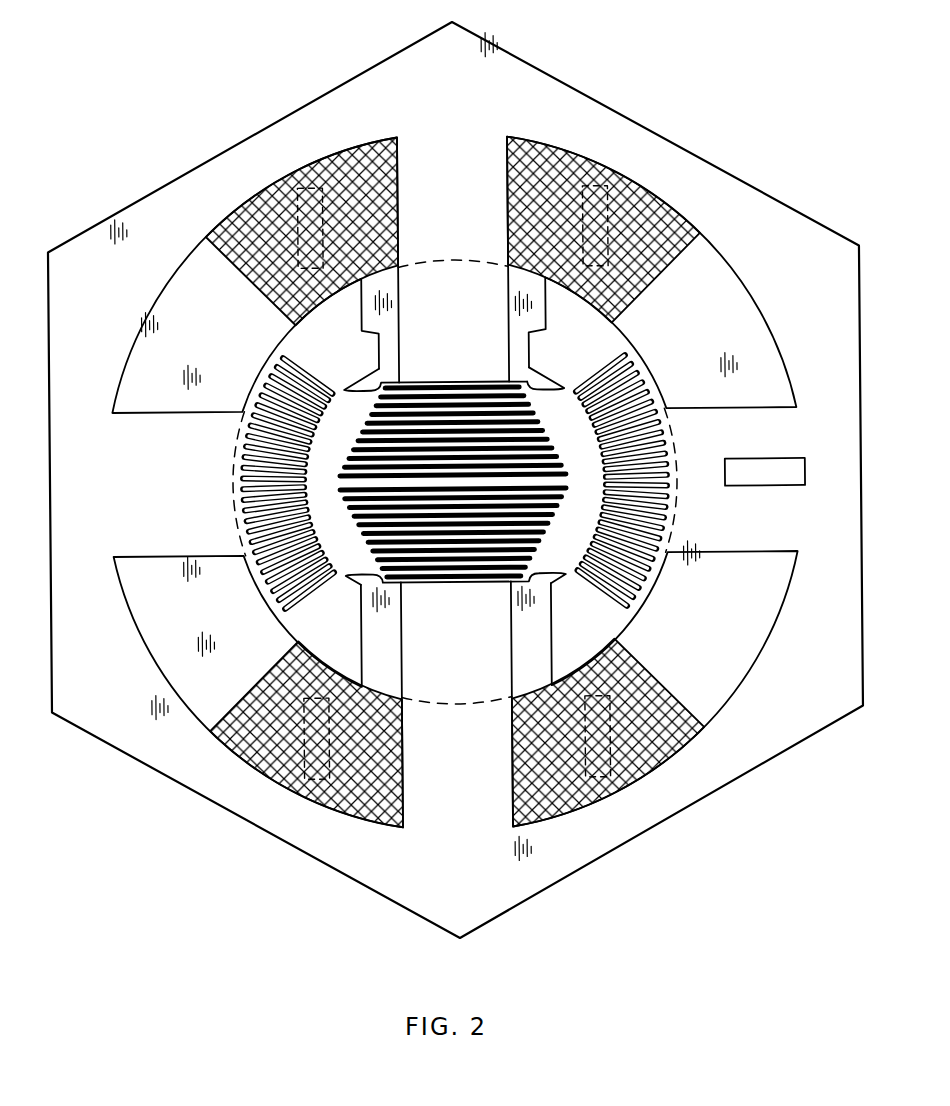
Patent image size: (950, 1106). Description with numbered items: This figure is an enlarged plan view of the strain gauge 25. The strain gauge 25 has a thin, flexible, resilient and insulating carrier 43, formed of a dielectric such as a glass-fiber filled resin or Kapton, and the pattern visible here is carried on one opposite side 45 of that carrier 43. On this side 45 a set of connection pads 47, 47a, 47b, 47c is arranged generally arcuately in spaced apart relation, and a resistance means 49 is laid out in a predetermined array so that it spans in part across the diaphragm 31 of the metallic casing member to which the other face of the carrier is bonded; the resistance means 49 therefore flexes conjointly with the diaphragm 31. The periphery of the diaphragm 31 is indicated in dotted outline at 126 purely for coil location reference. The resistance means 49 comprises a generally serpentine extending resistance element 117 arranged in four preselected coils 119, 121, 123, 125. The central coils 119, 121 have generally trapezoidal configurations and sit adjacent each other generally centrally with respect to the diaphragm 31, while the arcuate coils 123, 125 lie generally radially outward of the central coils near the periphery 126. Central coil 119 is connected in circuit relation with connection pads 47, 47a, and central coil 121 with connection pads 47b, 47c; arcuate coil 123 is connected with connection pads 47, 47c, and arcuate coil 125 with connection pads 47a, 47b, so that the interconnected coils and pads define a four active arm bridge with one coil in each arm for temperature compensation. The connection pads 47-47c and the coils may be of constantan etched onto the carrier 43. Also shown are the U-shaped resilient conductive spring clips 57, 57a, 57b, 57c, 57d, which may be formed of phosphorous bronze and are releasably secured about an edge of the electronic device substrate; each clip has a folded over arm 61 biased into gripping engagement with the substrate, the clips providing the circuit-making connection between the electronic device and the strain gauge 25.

The strain gauge 25 is at (840, 183).
The carrier 43 is at (796, 212).
The opposite side 45 is at (686, 158).
The connection pad 47 is at (160, 318).
The connection pad 47a is at (758, 318).
The connection pad 47b is at (753, 640).
The connection pad 47c is at (173, 655).
The spring clip 57 is at (320, 186).
The spring clip 57a is at (590, 190).
The spring clip 57b is at (606, 795).
The spring clip 57c is at (322, 776).
The spring clip 57d is at (790, 490).
The folded over arm 61 is at (267, 200).
The resistance element 117 is at (453, 478).
The central coil 119 is at (425, 385).
The central coil 121 is at (438, 580).
The arcuate coil 123 is at (246, 464).
The arcuate coil 125 is at (650, 440).
The periphery 126 is at (426, 262).
The diaphragm 31 is at (232, 450).
The resistance means 49 is at (238, 540).